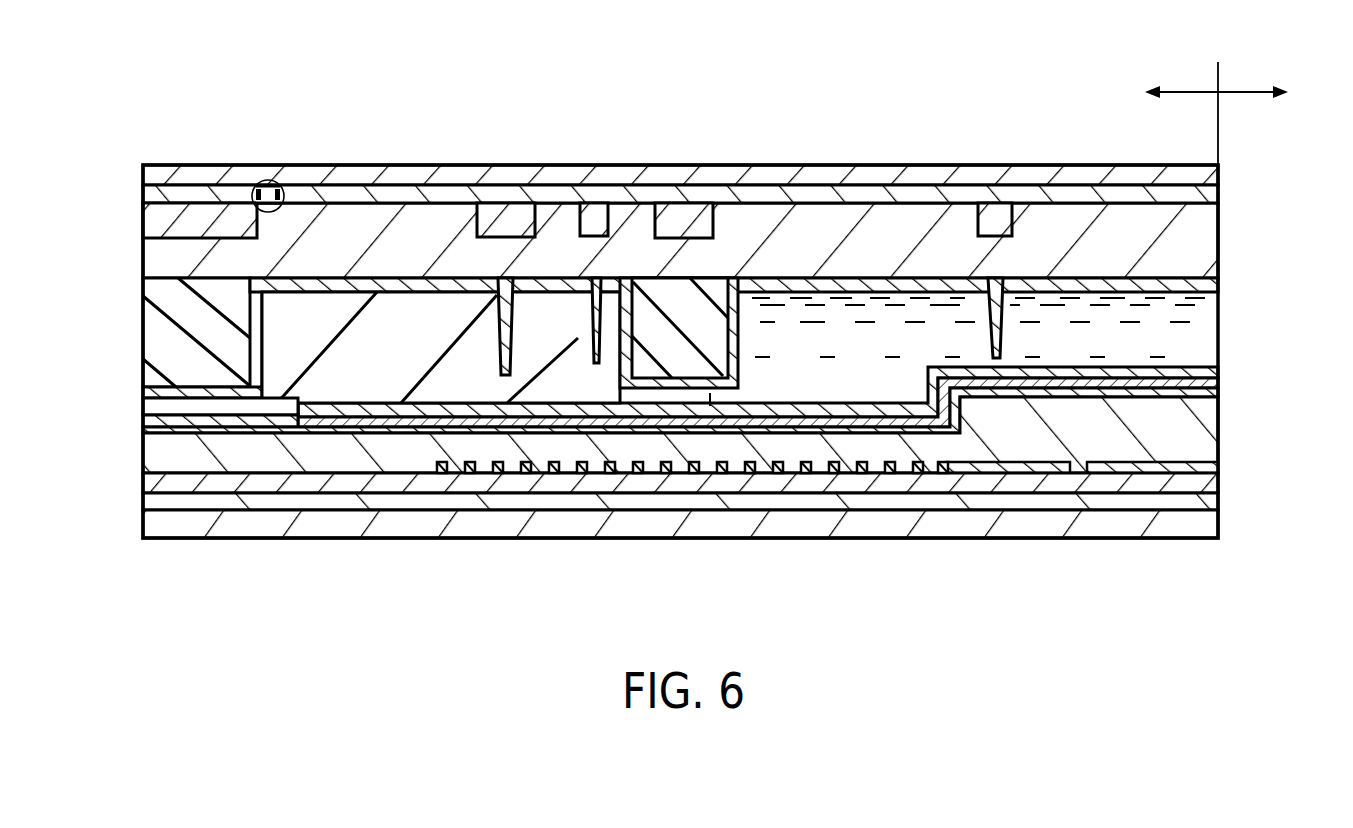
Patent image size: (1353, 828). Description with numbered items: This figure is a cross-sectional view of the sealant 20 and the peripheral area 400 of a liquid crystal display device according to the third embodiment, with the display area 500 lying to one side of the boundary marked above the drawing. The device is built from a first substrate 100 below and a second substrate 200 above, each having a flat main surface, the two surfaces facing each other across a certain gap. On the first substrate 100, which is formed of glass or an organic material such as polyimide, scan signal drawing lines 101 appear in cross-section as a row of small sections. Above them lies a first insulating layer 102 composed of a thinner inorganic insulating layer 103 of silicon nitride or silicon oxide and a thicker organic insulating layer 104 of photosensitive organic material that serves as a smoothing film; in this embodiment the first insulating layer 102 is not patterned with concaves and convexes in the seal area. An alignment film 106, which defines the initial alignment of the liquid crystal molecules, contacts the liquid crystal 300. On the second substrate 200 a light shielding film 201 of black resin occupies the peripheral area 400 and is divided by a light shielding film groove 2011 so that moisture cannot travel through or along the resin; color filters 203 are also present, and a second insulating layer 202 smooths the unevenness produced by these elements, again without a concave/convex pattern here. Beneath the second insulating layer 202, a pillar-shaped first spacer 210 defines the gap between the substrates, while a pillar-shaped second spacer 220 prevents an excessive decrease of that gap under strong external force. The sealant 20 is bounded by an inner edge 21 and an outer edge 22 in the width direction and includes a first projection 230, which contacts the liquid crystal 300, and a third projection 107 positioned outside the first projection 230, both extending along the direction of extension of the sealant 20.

The first substrate 100 is at (1045, 520).
The scan signal drawing lines 101 is at (893, 474).
The first insulating layer 102 is at (746, 412).
The inorganic insulating layer 103 is at (1210, 390).
The organic insulating layer 104 is at (1210, 412).
The alignment film 106 is at (1198, 285).
The third projection 107 is at (155, 343).
The sealant 20 is at (338, 300).
The inner edge 21 is at (713, 399).
The outer edge 22 is at (165, 407).
The second substrate 200 is at (933, 175).
The light shielding film 201 is at (1075, 194).
The second insulating layer 202 is at (1132, 222).
The color filters 203 is at (190, 213).
The light shielding film groove 2011 is at (287, 197).
The first spacer 210 is at (503, 300).
The second spacer 220 is at (592, 300).
The first projection 230 is at (676, 290).
The liquid crystal 300 is at (1200, 312).
The peripheral area 400 is at (1216, 113).
The display area 500 is at (1248, 76).